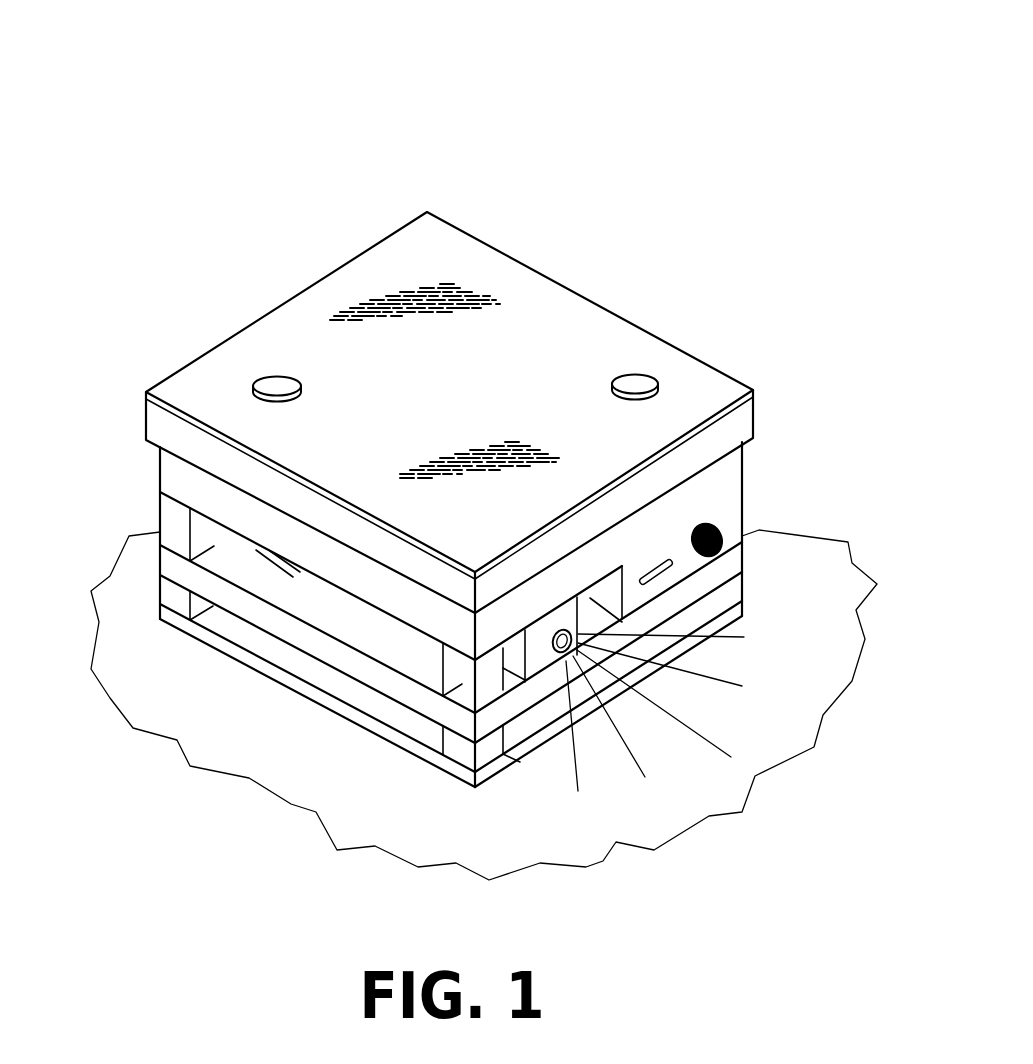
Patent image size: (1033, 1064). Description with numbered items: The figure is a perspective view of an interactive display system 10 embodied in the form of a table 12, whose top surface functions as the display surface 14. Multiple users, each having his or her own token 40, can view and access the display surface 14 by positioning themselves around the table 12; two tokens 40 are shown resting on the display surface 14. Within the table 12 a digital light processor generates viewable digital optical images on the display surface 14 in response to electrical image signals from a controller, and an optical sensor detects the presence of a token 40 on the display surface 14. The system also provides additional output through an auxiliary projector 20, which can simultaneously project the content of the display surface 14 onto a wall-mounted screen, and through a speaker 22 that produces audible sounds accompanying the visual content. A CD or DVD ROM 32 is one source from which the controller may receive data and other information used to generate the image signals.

The interactive display system 10 is at (473, 455).
The table 12 is at (148, 483).
The display surface 14 is at (582, 290).
The projector 20 is at (540, 688).
The speaker 22 is at (728, 520).
The CD or DVD ROM 32 is at (668, 583).
The token 40 is at (278, 383).